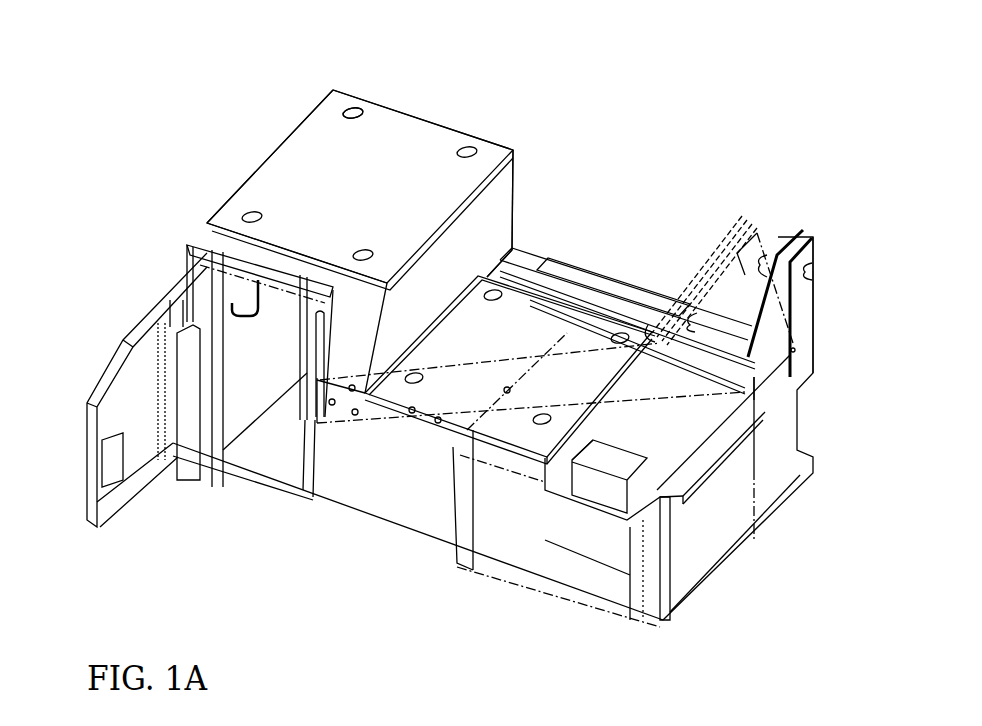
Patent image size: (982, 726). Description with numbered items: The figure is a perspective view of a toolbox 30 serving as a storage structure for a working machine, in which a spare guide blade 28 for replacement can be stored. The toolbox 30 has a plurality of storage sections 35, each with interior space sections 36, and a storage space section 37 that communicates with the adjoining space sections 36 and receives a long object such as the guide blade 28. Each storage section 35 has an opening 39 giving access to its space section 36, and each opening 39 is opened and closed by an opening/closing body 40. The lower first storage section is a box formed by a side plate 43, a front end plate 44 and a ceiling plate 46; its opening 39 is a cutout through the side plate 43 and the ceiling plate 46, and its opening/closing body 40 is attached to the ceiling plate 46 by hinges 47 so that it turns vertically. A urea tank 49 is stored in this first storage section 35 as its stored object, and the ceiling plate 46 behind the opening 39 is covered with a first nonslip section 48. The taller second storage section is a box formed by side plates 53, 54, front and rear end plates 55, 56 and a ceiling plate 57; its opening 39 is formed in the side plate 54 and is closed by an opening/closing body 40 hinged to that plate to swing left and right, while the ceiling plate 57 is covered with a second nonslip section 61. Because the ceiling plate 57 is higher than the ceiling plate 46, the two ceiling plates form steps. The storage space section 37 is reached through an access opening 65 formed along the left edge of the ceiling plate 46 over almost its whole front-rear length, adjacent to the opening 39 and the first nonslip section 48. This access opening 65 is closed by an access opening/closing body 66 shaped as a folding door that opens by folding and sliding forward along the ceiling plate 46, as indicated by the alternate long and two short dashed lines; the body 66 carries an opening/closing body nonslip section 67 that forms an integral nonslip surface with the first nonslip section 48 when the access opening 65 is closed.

The spare guide blade 28 is at (410, 420).
The toolbox 30 is at (610, 155).
The storage section 35 is at (284, 123).
The space section 36 is at (237, 410).
The storage space section 37 is at (594, 288).
The opening 39 is at (307, 478).
The opening/closing body 40 is at (544, 462).
The side plate 43 is at (602, 593).
The front end plate 44 is at (694, 557).
The ceiling plate 46 is at (537, 262).
The hinge 47 is at (765, 300).
The first nonslip section 48 is at (474, 425).
The urea tank 49 is at (757, 455).
The side plate 53 is at (515, 173).
The side plate 54 is at (213, 235).
The front end plate 55 is at (510, 206).
The rear end plate 56 is at (262, 167).
The ceiling plate 57 is at (437, 136).
The second nonslip section 61 is at (398, 126).
The access opening 65 is at (640, 293).
The access opening/closing body 66 is at (814, 242).
The opening/closing body nonslip section 67 is at (573, 271).